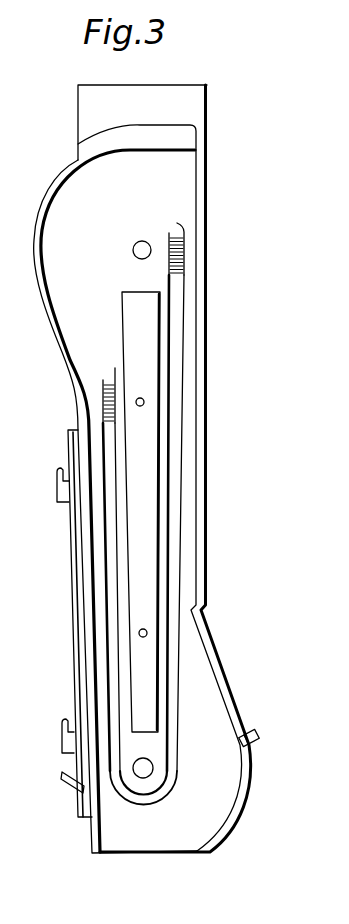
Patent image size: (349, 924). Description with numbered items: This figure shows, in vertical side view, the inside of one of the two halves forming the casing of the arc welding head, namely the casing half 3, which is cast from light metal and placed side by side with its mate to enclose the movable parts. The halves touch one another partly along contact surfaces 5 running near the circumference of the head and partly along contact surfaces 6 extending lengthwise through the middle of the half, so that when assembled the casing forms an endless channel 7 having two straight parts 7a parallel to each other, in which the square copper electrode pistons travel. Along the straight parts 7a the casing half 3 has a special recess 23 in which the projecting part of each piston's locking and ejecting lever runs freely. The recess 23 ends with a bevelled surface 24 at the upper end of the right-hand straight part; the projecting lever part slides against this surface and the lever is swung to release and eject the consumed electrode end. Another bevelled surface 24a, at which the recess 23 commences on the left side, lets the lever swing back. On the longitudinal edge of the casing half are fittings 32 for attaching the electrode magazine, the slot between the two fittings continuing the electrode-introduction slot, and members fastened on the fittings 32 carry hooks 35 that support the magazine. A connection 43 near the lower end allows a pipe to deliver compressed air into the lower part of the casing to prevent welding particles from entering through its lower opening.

The casing half 3 is at (207, 207).
The contact surfaces 5 is at (90, 100).
The contact surfaces 6 is at (143, 522).
The endless channel 7 is at (93, 182).
The straight parts of the channel 7a is at (185, 435).
The recess 23 is at (176, 290).
The bevelled surface 24 is at (172, 227).
The bevelled surface 24a is at (105, 375).
The fittings 32 is at (80, 595).
The hooks 35 is at (60, 485).
The connection 43 is at (248, 727).